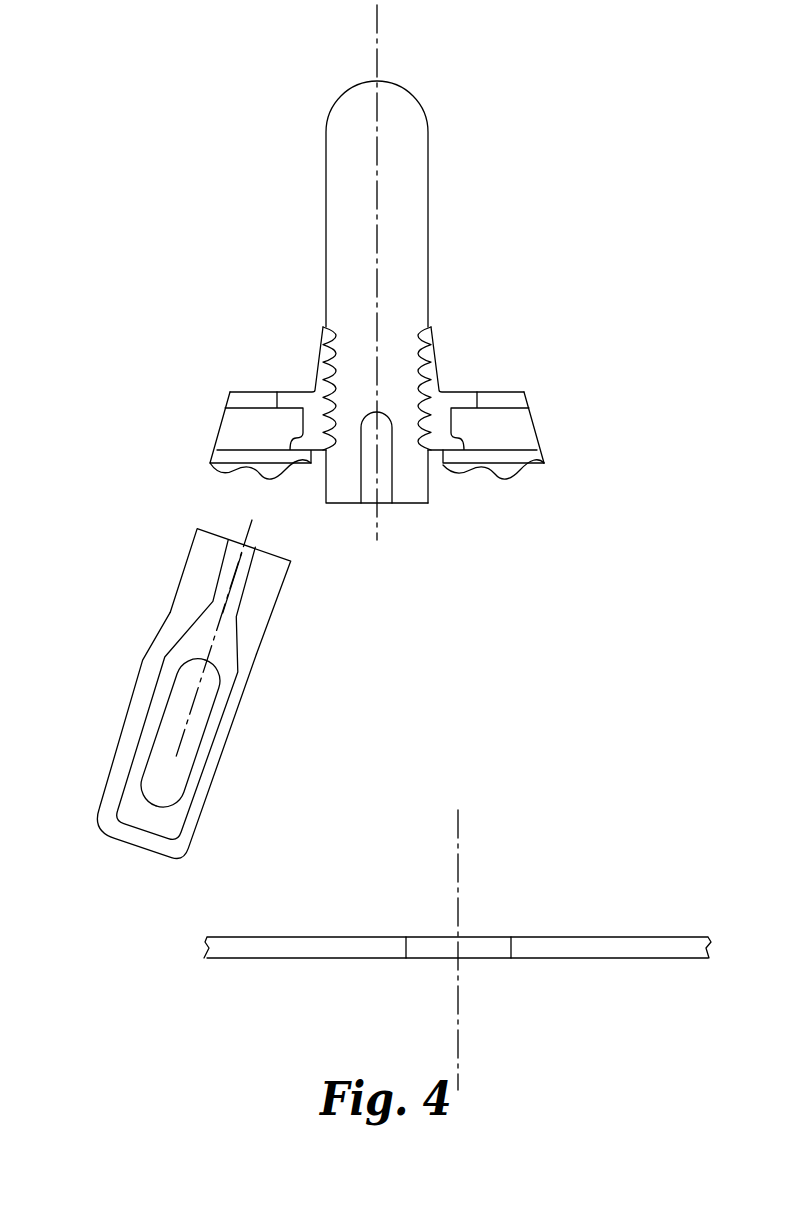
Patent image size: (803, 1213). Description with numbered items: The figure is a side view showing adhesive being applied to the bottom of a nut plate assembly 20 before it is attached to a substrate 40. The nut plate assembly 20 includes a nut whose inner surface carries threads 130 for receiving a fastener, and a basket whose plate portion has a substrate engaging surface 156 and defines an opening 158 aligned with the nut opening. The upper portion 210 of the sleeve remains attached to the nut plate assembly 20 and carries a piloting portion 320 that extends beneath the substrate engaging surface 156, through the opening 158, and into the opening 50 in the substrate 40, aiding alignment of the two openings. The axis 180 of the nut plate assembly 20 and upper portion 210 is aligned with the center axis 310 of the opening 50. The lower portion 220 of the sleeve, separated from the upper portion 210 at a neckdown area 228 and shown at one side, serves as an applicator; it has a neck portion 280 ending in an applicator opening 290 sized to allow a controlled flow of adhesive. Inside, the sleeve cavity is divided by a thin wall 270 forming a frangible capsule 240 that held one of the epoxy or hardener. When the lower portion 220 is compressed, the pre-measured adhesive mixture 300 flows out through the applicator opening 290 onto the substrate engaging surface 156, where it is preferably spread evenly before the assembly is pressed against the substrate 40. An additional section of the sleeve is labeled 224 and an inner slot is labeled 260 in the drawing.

The nut plate assembly 20 is at (553, 377).
The substrate 40 is at (628, 945).
The opening 50 is at (503, 925).
The threads 130 is at (421, 372).
The substrate engaging surface 156 is at (525, 463).
The opening 158 is at (433, 478).
The axis 180 is at (377, 30).
The upper portion 210 is at (297, 178).
The lower portion 220 is at (123, 722).
The pin shank 224 is at (357, 337).
The neckdown area 228 is at (173, 736).
The capsule 240 is at (170, 729).
The bushing slot 260 is at (194, 687).
The thin wall 270 is at (191, 736).
The neck portion 280 is at (228, 592).
The applicator opening 290 is at (237, 537).
The adhesive mixture 300 is at (485, 483).
The center axis 310 is at (458, 833).
The piloting portion 320 is at (412, 515).